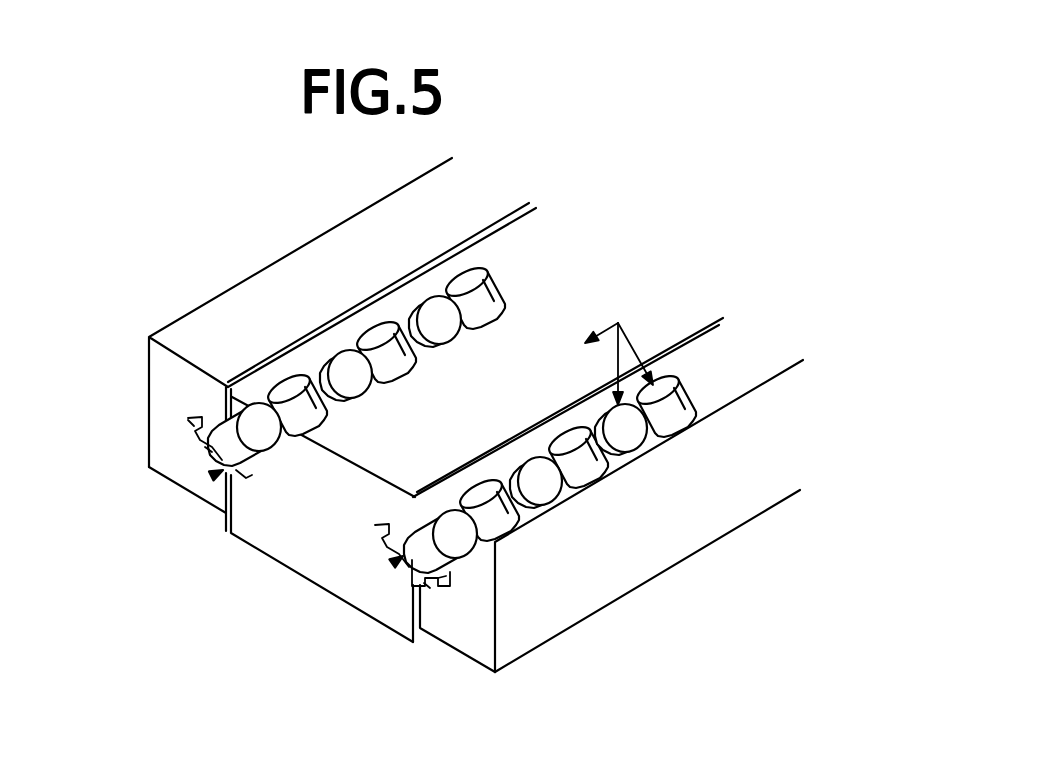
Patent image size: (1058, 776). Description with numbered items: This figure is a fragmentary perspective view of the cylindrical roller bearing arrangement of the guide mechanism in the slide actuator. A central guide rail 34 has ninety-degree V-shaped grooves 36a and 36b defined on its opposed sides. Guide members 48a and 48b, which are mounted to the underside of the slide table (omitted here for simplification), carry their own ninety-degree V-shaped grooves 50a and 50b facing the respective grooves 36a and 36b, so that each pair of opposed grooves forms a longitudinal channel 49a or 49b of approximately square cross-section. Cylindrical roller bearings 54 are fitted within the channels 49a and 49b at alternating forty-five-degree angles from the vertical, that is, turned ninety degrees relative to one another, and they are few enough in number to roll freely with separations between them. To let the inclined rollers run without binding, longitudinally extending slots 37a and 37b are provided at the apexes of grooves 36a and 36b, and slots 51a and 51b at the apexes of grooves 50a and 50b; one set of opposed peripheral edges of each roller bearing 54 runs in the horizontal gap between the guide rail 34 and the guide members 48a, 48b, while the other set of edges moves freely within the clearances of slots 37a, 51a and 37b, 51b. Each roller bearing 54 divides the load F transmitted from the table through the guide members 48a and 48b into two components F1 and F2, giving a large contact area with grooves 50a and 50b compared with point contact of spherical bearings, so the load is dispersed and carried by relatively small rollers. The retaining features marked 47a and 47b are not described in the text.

The central guide rail 34 is at (283, 562).
The V-shaped groove 36a is at (366, 598).
The V-shaped groove 36b is at (236, 540).
The longitudinally extending slot 37a is at (392, 545).
The longitudinally extending slot 37b is at (258, 464).
The retainer 47a is at (415, 492).
The retainer 47b is at (228, 386).
The guide member 48a is at (600, 565).
The guide member 48b is at (185, 440).
The longitudinal channel 49a is at (403, 556).
The longitudinal channel 49b is at (223, 470).
The V-shaped groove 50a is at (424, 583).
The V-shaped groove 50b is at (210, 447).
The longitudinally extending slot 51a is at (438, 578).
The longitudinally extending slot 51b is at (190, 422).
The roller bearing 54 is at (613, 405).
The load F is at (618, 366).
The load component F1 is at (635, 342).
The load component F2 is at (604, 333).